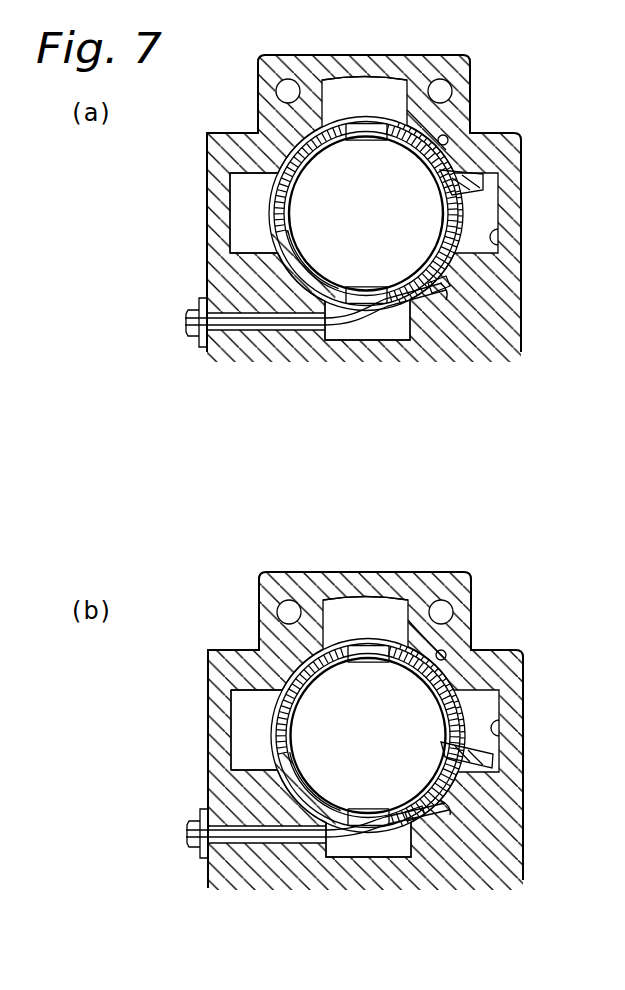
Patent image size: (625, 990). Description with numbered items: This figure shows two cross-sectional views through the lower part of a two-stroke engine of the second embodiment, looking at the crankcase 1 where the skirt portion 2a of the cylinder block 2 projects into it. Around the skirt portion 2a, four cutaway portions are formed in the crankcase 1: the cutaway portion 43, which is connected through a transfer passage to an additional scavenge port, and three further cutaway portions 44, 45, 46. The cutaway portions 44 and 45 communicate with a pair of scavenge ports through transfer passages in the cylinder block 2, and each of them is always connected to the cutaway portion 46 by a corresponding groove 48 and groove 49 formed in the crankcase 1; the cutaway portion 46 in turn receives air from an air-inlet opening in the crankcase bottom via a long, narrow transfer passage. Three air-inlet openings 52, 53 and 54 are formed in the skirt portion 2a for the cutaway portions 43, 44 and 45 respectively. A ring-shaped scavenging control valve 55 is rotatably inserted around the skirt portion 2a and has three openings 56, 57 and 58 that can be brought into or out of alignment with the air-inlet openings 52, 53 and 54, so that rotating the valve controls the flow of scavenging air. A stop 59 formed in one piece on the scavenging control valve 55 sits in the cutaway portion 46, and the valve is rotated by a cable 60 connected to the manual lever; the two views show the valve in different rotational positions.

The crankcase 1 is at (513, 134).
The cylinder block 2 is at (320, 159).
The skirt portion 2a is at (312, 270).
The cutaway portion 43 is at (232, 222).
The cutaway portion 44 is at (378, 80).
The cutaway portion 45 is at (374, 343).
The cutaway portion 46 is at (499, 251).
The groove 48 is at (454, 143).
The groove 49 is at (448, 292).
The air-inlet opening 52 is at (290, 218).
The air-inlet opening 53 is at (366, 138).
The air-inlet opening 54 is at (380, 280).
The scavenging control valve 55 is at (471, 72).
The opening 56 is at (290, 273).
The opening 57 is at (320, 126).
The opening 58 is at (403, 294).
The stop 59 is at (490, 192).
The cable 60 is at (328, 343).